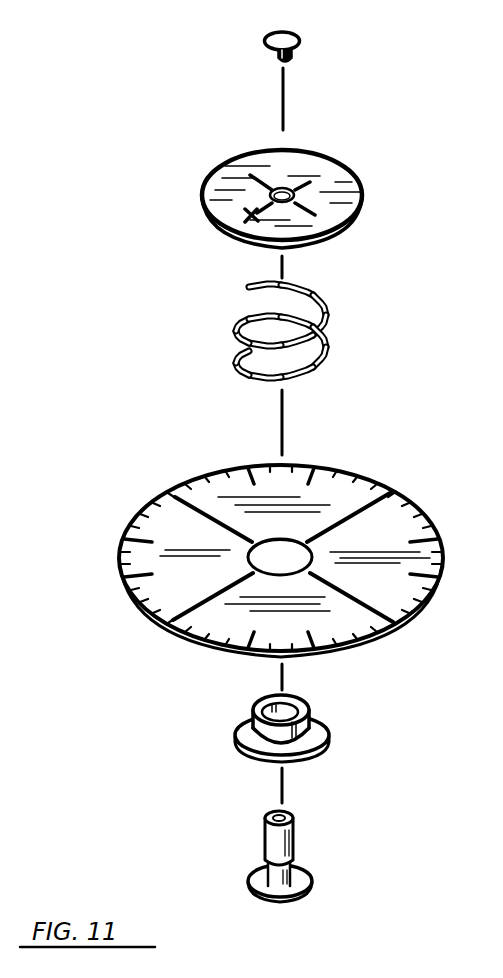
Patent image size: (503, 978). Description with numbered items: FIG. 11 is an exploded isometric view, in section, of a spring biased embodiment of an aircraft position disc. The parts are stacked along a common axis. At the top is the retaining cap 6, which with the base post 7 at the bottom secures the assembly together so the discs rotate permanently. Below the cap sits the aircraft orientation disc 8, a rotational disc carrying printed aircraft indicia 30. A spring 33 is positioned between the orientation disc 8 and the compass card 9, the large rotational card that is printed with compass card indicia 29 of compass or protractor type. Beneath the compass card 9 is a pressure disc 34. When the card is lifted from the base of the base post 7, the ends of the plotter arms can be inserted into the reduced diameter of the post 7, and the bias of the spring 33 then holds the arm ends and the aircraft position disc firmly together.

The retaining cap 6 is at (298, 33).
The aircraft orientation disc 8 is at (338, 158).
The aircraft indicia 30 is at (268, 188).
The spring 33 is at (326, 352).
The compass card 9 is at (415, 505).
The compass card indicia 29 is at (200, 492).
The pressure disc 34 is at (325, 713).
The base post 7 is at (294, 838).